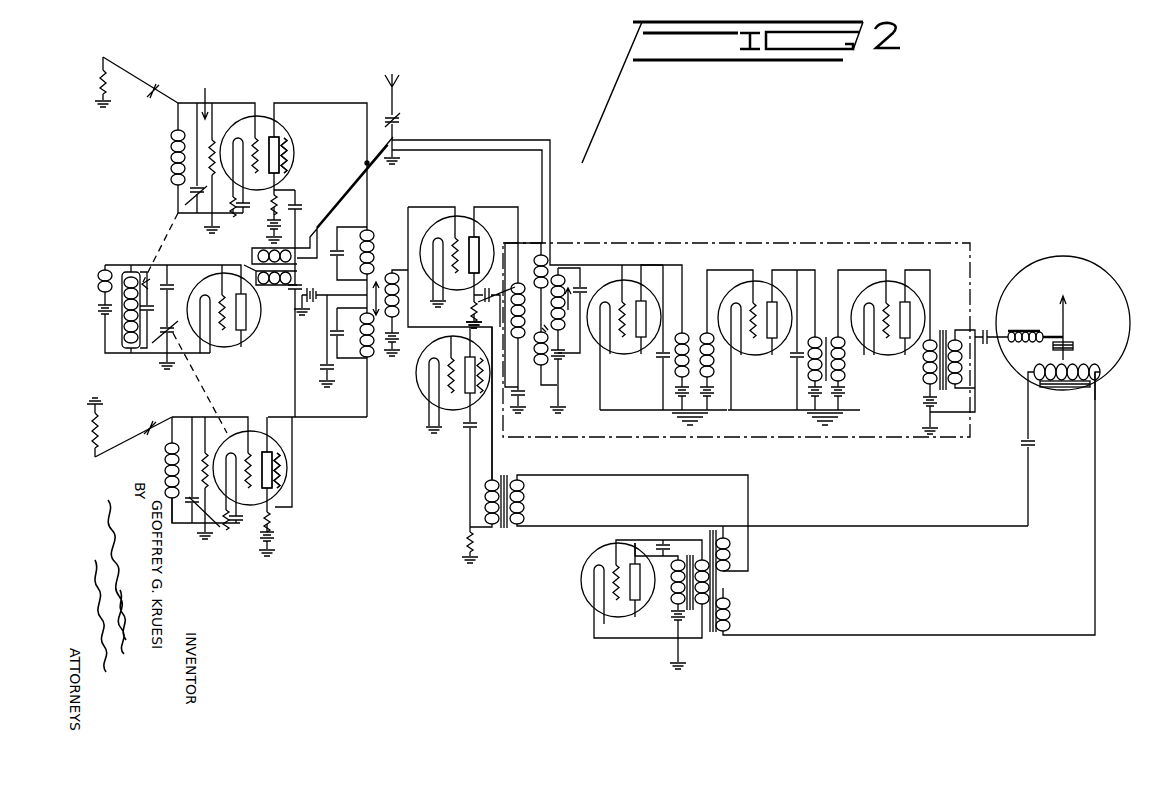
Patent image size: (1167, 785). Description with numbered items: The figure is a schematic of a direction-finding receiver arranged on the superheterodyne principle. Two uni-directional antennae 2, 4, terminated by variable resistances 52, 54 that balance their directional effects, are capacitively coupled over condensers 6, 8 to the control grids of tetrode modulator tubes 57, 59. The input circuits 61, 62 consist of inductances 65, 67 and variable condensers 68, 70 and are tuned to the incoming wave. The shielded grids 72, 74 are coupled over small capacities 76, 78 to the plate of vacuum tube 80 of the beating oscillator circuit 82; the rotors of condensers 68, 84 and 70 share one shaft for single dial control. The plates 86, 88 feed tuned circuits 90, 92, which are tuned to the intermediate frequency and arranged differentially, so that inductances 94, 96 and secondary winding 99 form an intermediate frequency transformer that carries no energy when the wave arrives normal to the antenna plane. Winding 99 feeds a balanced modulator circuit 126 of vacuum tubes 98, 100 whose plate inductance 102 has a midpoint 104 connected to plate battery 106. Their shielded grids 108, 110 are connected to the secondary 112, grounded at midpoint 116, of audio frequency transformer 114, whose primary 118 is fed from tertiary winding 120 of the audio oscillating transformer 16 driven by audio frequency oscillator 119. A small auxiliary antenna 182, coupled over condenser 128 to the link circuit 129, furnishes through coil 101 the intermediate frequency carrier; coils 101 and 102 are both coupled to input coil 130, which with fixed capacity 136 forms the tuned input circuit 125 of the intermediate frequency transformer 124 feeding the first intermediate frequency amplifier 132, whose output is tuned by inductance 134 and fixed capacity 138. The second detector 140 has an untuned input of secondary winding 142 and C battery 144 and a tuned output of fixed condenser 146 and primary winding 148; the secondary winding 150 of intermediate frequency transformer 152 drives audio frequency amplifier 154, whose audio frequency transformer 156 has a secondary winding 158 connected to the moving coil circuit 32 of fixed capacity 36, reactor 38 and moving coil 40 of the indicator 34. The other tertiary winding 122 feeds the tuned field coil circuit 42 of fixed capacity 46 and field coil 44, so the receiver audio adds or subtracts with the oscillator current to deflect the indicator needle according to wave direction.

The uni-directional antenna 2 is at (115, 66).
The uni-directional antenna 4 is at (126, 442).
The condenser 6 is at (160, 89).
The condenser 8 is at (148, 428).
The audio oscillating transformer 16 is at (694, 612).
The moving coil circuit 32 is at (1040, 362).
The indicator 34 is at (1122, 291).
The fixed capacity 36 is at (985, 346).
The reactor 38 is at (1012, 330).
The moving coil 40 is at (1075, 347).
The tuned field coil circuit 42 is at (1068, 420).
The field coil 44 is at (1102, 373).
The fixed capacity 46 is at (1025, 446).
The terminating resistance 52 is at (99, 82).
The terminating resistance 54 is at (94, 425).
The vacuum tube 57 is at (285, 132).
The vacuum tube 59 is at (284, 462).
The input circuit 61 is at (216, 100).
The input circuit 62 is at (190, 524).
The inductance 65 is at (171, 159).
The inductance 67 is at (166, 468).
The variable condenser 68 is at (185, 205).
The variable condenser 70 is at (213, 521).
The shielded grid 72 is at (297, 165).
The shielded grid 74 is at (288, 482).
The capacity 76 is at (300, 206).
The capacity 78 is at (295, 291).
The vacuum tube 80 is at (245, 344).
The beating oscillator circuit 82 is at (163, 284).
The condenser 84 is at (156, 351).
The plate 86 is at (281, 147).
The plate 88 is at (273, 468).
The tuned circuit 90 is at (349, 244).
The tuned circuit 92 is at (351, 355).
The inductance 94 is at (373, 252).
The inductance 96 is at (399, 338).
The vacuum tube 98 is at (447, 217).
The secondary winding 99 is at (399, 300).
The vacuum tube 100 is at (419, 384).
The inductance coil 101 is at (559, 380).
The plate inductance 102 is at (470, 318).
The midpoint 104 is at (526, 345).
The plate battery 106 is at (525, 393).
The shielded grid 108 is at (487, 241).
The shielded grid 110 is at (463, 426).
The secondary 112 is at (485, 490).
The audio frequency transformer 114 is at (506, 538).
The midpoint 116 is at (483, 500).
The primary 118 is at (526, 500).
The audio frequency oscillator 119 is at (590, 598).
The tertiary winding 120 is at (740, 554).
The tertiary winding 122 is at (740, 613).
The intermediate frequency transformer 124 is at (537, 282).
The tuned input circuit 125 is at (545, 330).
The balanced modulator circuit 126 is at (476, 296).
The condenser 128 is at (403, 122).
The link circuit 129 is at (348, 184).
The input coil 130 is at (548, 325).
The first intermediate frequency amplifier 132 is at (627, 283).
The inductance 134 is at (675, 370).
The fixed capacity 136 is at (583, 290).
The fixed capacity 138 is at (658, 357).
The second detector 140 is at (763, 283).
The secondary winding 142 is at (715, 362).
The C battery 144 is at (716, 392).
The fixed condenser 146 is at (793, 355).
The primary winding 148 is at (810, 364).
The secondary winding 150 is at (845, 366).
The intermediate frequency transformer 152 is at (827, 336).
The audio frequency amplifier 154 is at (893, 283).
The audio frequency transformer 156 is at (922, 392).
The secondary winding 158 is at (956, 382).
The auxiliary antenna 182 is at (402, 92).